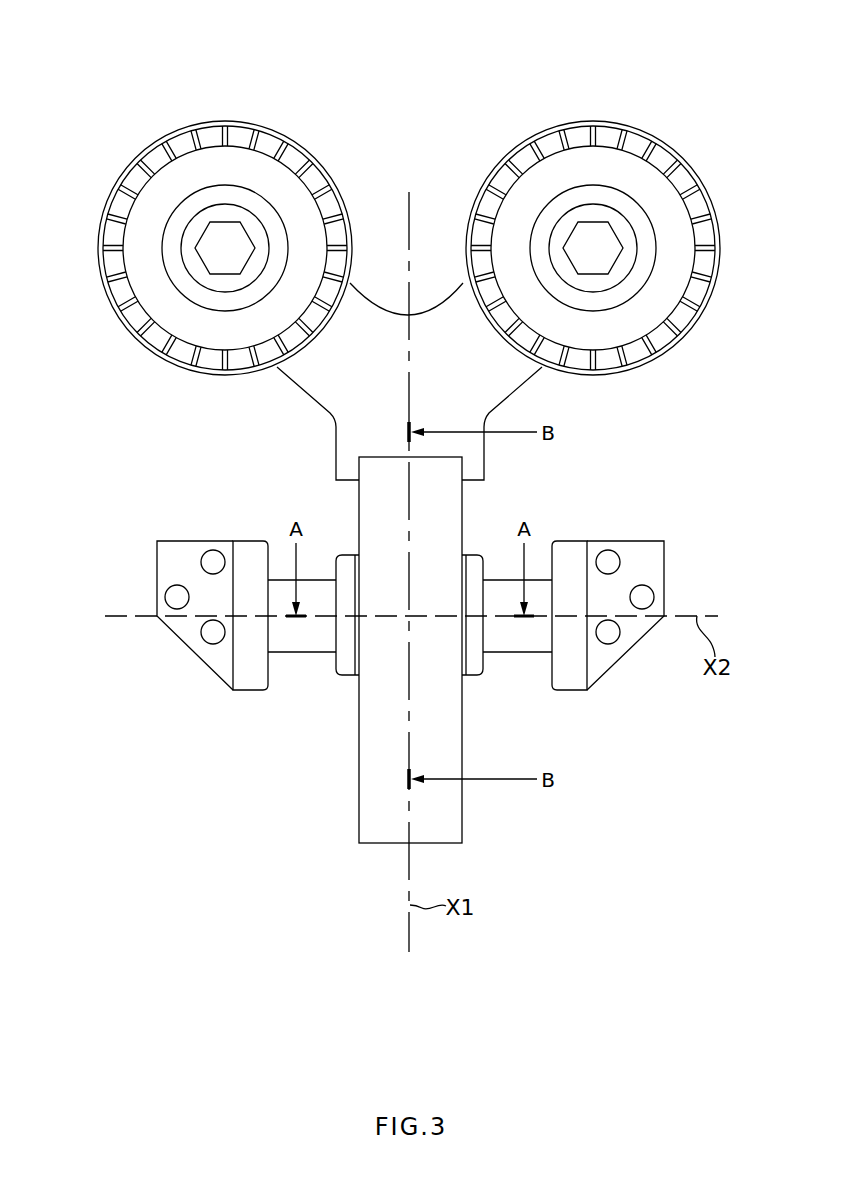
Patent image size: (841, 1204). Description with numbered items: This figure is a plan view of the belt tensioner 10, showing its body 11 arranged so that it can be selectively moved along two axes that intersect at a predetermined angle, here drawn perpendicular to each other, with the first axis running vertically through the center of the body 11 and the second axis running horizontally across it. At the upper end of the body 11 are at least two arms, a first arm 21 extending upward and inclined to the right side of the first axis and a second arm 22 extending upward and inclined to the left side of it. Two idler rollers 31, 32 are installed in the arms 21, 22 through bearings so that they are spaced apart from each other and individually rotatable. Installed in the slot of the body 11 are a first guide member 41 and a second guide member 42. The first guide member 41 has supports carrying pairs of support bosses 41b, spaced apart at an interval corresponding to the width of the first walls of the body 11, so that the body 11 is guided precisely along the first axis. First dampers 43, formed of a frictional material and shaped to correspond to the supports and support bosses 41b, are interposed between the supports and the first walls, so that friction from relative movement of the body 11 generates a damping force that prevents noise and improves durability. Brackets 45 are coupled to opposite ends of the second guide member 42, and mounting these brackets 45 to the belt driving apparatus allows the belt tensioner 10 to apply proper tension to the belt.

The belt tensioner 10 is at (43, 24).
The body 11 is at (484, 824).
The first arm 21 is at (512, 377).
The second arm 22 is at (308, 377).
The idler roller 31 is at (592, 122).
The idler roller 32 is at (224, 122).
The first guide member 41 is at (341, 697).
The support bosses 41b is at (473, 667).
The second guide member 42 is at (294, 644).
The first dampers 43 is at (462, 678).
The brackets 45 is at (170, 562).